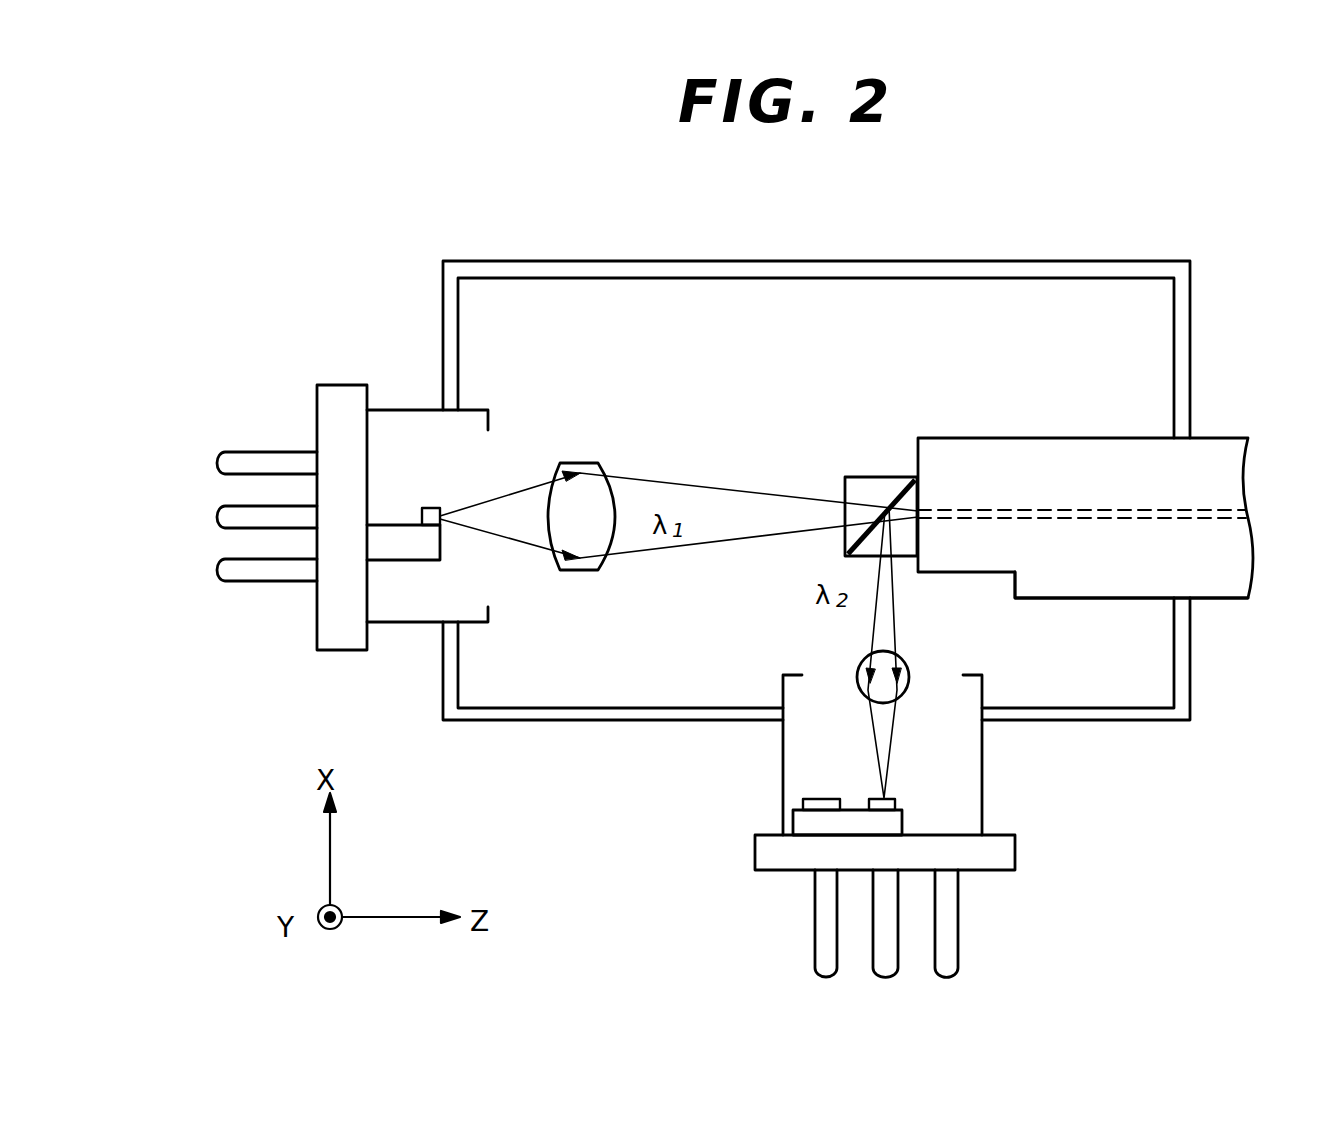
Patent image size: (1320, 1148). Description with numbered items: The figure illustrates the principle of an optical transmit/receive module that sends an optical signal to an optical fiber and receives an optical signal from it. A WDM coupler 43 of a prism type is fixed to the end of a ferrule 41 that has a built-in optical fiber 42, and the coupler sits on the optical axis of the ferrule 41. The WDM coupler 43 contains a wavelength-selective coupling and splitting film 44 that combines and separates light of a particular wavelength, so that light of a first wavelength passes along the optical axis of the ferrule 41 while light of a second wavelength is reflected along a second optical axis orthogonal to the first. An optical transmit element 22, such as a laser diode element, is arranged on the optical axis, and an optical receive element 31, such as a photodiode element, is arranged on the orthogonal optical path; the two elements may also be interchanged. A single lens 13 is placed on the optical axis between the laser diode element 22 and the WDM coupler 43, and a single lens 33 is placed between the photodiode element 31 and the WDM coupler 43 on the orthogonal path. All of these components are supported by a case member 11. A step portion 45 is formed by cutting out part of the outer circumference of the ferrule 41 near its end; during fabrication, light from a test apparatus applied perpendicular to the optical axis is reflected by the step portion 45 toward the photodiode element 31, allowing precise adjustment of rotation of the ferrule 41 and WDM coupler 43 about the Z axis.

The case member 11 is at (812, 260).
The single lens 13 is at (583, 463).
The optical transmit element 22 is at (430, 508).
The optical receive element 31 is at (895, 799).
The single lens 33 is at (857, 672).
The ferrule 41 is at (978, 438).
The optical fiber 42 is at (1080, 510).
The WDM coupler 43 is at (845, 477).
The wavelength-selective coupling and splitting film 44 is at (893, 500).
The step portion 45 is at (985, 572).